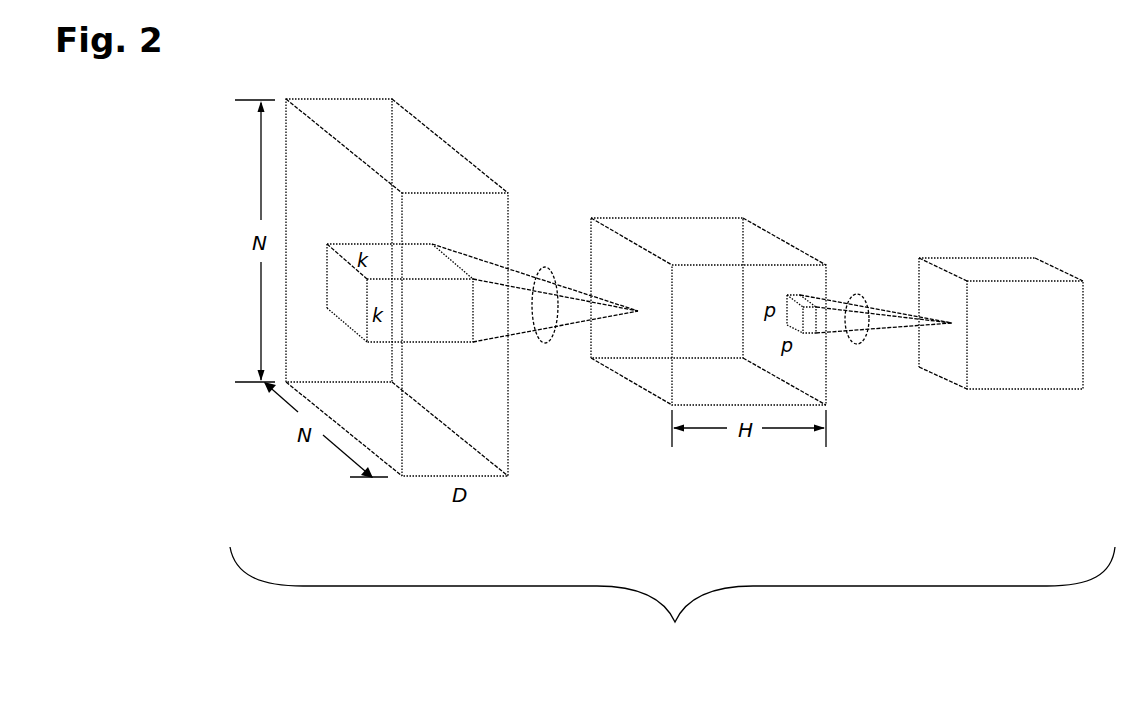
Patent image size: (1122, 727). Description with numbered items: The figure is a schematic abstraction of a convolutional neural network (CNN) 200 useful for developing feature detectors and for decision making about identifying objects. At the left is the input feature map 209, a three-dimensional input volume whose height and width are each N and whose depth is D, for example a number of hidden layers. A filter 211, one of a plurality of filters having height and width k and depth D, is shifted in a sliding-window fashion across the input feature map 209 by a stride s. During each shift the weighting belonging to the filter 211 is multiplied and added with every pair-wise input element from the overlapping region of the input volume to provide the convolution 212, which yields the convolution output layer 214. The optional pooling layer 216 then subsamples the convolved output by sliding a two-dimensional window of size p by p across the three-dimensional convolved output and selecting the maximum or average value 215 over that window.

The convolutional neural network (CNN) 200 is at (672, 597).
The input feature map 209 is at (430, 132).
The filter 211 is at (352, 303).
The convolution 212 is at (545, 267).
The convolution output layer 214 is at (750, 233).
The maximum (or average) value 215 is at (850, 298).
The pooling layer 216 is at (1020, 265).